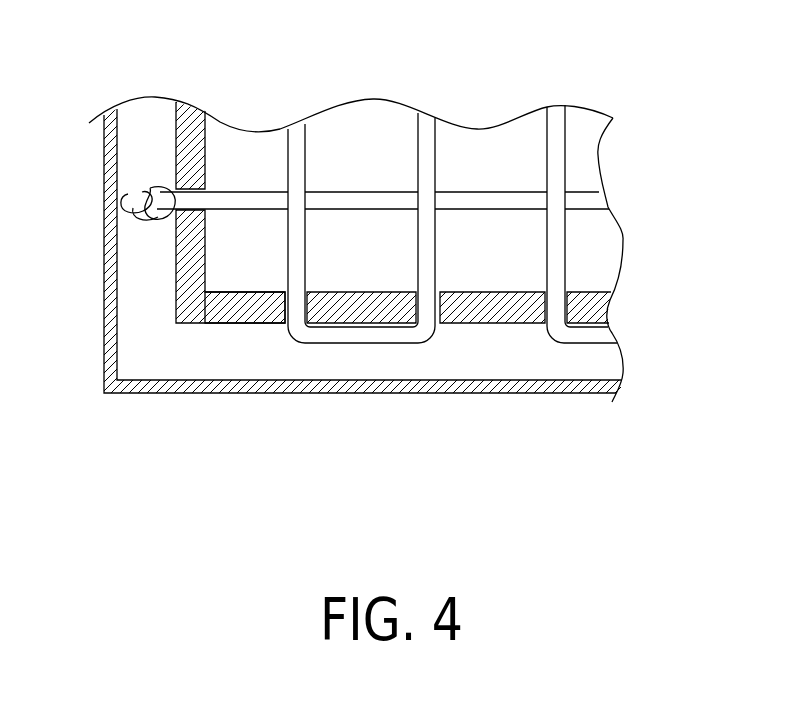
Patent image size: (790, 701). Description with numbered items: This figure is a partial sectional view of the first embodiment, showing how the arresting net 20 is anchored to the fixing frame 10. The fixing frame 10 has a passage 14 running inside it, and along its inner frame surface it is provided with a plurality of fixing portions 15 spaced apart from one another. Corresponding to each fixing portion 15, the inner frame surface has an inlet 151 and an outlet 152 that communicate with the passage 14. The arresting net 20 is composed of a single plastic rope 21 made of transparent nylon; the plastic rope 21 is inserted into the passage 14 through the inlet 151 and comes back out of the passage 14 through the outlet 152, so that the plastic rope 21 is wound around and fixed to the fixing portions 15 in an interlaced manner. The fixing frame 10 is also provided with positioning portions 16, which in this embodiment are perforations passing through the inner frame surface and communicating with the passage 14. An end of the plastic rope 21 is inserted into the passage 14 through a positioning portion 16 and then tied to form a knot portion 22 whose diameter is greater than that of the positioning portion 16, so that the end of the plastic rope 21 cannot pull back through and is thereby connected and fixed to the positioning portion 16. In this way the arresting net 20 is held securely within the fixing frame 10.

The fixing frame 10 is at (521, 407).
The passage 14 is at (608, 366).
The fixing portion 15 is at (355, 303).
The inlet 151 is at (283, 306).
The outlet 152 is at (443, 310).
The positioning portion 16 is at (190, 185).
The arresting net 20 is at (582, 151).
The plastic rope 21 is at (484, 198).
The knot portion 22 is at (150, 188).